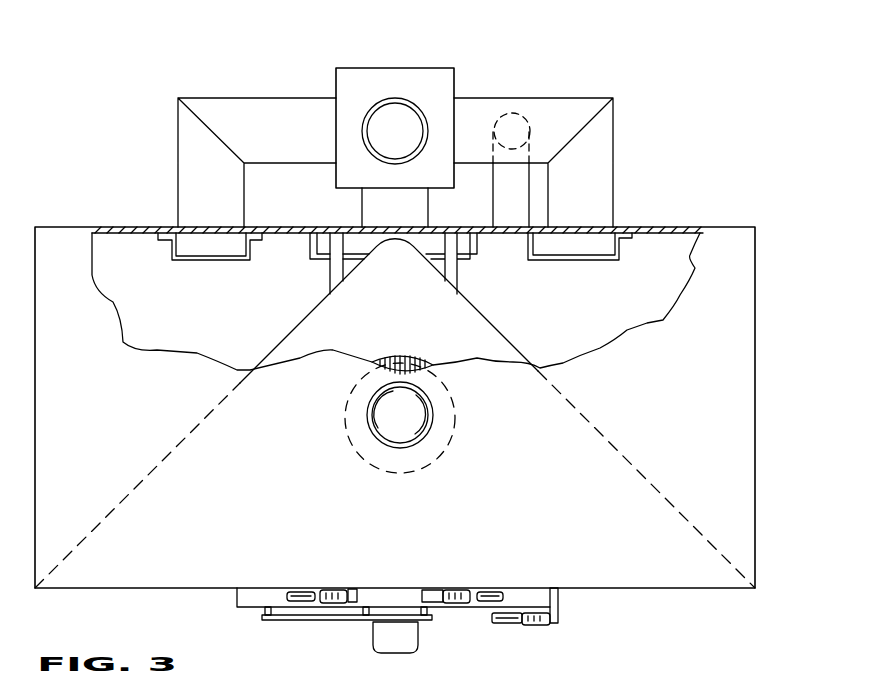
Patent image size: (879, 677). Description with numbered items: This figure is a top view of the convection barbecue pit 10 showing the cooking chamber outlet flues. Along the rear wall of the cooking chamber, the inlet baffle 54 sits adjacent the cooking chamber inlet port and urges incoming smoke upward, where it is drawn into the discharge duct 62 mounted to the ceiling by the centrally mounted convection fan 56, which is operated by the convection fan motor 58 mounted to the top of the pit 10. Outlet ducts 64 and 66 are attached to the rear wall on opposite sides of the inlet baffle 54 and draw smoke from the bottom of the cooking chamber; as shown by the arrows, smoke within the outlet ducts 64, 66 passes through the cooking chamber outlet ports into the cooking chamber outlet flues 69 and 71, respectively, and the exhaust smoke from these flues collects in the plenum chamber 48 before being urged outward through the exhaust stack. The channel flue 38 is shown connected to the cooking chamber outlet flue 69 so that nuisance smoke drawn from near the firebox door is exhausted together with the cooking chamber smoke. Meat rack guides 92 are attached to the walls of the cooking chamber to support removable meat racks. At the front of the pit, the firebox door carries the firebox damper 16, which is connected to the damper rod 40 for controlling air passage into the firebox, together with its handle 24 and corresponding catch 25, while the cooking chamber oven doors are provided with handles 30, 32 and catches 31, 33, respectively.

The convection barbecue pit 10 is at (754, 166).
The firebox damper 16 is at (390, 647).
The handle 24 is at (535, 625).
The catch 25 is at (560, 602).
The handle 30 is at (490, 590).
The catch 31 is at (427, 590).
The handle 32 is at (295, 590).
The catch 33 is at (357, 590).
The channel flue 38 is at (525, 202).
The damper rod 40 is at (317, 623).
The plenum chamber 48 is at (407, 66).
The inlet baffle 54 is at (477, 263).
The convection fan 56 is at (403, 358).
The convection fan motor 58 is at (433, 413).
The discharge duct 62 is at (505, 337).
The outlet duct 64 is at (620, 258).
The outlet duct 66 is at (171, 258).
The cooking chamber outlet flue 69 is at (545, 127).
The cooking chamber outlet flue 71 is at (247, 127).
The meat rack guide 92 is at (330, 281).